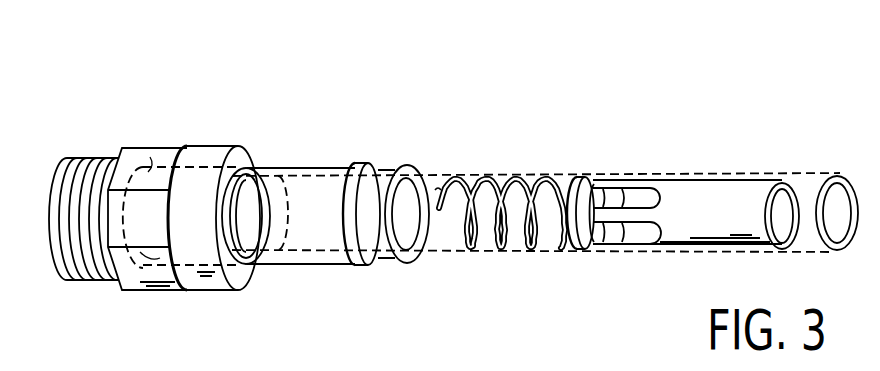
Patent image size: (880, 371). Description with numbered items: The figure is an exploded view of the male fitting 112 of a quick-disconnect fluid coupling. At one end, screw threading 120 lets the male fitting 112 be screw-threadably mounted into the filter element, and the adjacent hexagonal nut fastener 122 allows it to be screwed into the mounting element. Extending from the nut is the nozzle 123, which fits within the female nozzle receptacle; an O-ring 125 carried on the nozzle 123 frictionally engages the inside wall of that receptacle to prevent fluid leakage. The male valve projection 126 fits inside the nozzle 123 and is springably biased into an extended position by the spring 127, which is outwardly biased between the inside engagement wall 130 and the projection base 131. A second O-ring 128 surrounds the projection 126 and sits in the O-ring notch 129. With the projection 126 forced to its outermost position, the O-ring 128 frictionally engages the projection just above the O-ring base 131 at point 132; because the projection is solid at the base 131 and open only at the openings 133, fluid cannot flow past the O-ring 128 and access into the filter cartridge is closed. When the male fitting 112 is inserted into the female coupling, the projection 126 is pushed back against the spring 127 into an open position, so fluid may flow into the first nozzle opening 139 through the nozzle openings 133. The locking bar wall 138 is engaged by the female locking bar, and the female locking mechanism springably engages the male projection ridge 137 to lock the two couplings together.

The male fitting 112 is at (233, 106).
The screw threading 120 is at (97, 146).
The hexagonal nut fastener 122 is at (155, 156).
The nozzle 123 is at (318, 165).
The O-ring 125 is at (369, 160).
The male valve projection 126 is at (716, 177).
The spring 127 is at (488, 175).
The O-ring 128 is at (838, 212).
The O-ring notch 129 is at (277, 164).
The inside engagement wall 130 is at (158, 258).
The projection base 131 is at (578, 252).
The point 132 is at (596, 177).
The openings 133 is at (634, 188).
The male projection ridge 137 is at (254, 148).
The locking bar wall 138 is at (245, 272).
The first nozzle opening 139 is at (782, 212).